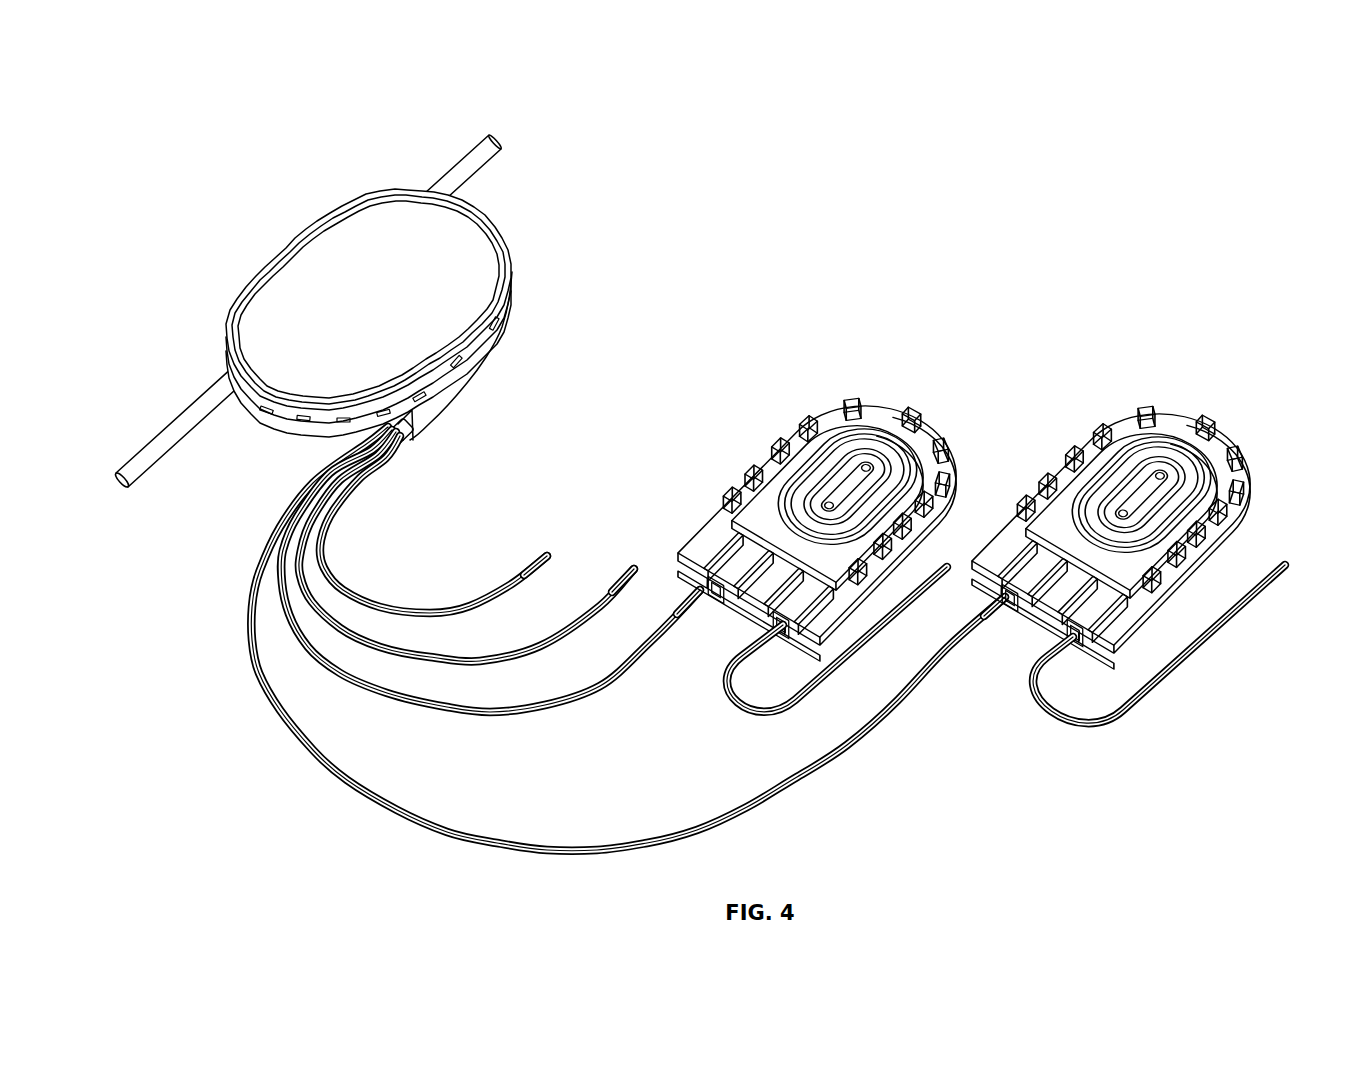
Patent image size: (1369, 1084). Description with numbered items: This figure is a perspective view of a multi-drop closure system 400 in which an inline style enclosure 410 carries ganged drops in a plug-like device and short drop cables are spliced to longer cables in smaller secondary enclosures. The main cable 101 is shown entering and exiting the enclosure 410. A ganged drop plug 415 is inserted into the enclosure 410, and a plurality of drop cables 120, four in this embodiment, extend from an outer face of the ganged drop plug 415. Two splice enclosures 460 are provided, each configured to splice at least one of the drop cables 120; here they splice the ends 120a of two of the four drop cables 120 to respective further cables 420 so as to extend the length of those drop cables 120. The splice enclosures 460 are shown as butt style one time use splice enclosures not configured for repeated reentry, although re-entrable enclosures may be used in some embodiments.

The multi-drop closure system 400 is at (898, 206).
The main cable 101 is at (460, 163).
The enclosure 410 is at (512, 265).
The ganged drop plug 415 is at (414, 432).
The drop cables 120 is at (345, 628).
The ends of drop cables 120a is at (547, 553).
The splice enclosures 460 is at (887, 412).
The further cables 420 is at (898, 608).